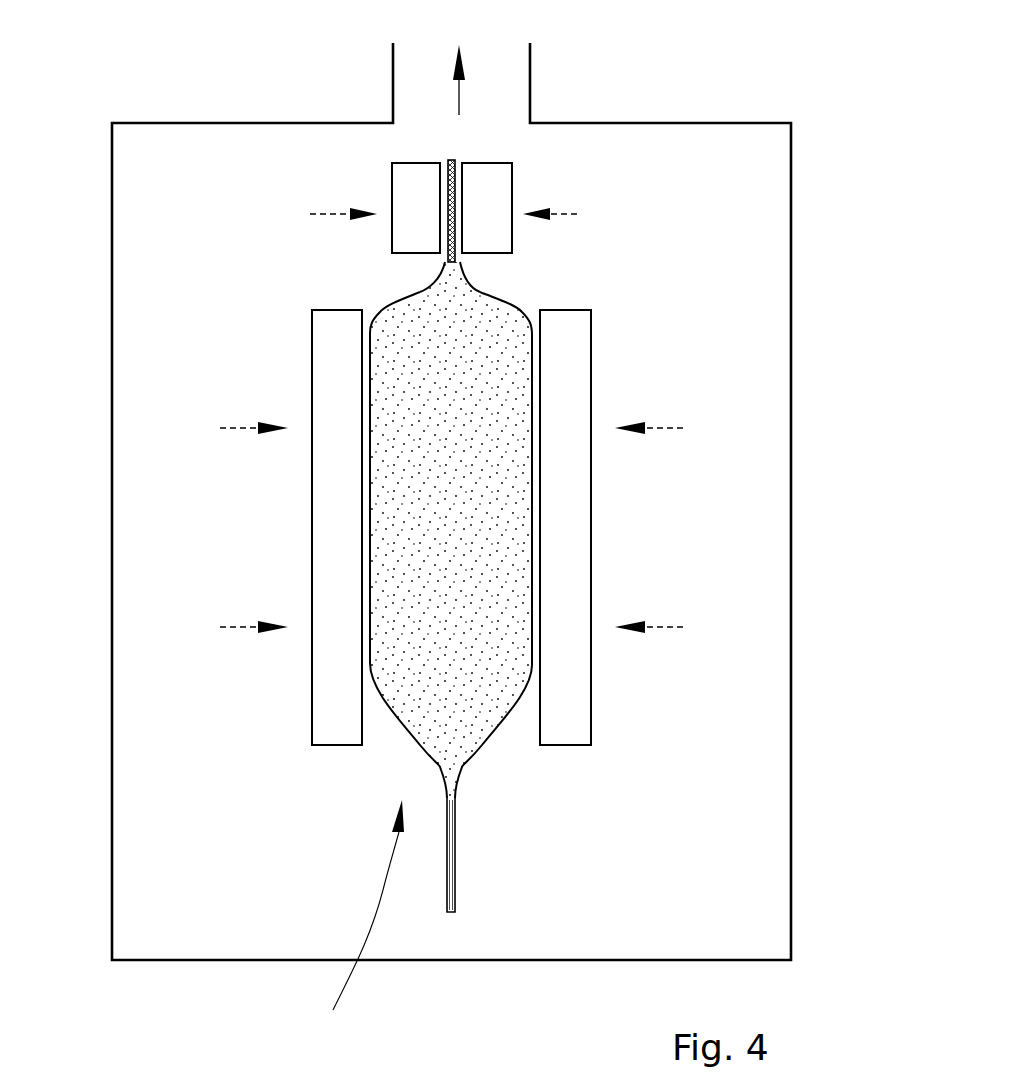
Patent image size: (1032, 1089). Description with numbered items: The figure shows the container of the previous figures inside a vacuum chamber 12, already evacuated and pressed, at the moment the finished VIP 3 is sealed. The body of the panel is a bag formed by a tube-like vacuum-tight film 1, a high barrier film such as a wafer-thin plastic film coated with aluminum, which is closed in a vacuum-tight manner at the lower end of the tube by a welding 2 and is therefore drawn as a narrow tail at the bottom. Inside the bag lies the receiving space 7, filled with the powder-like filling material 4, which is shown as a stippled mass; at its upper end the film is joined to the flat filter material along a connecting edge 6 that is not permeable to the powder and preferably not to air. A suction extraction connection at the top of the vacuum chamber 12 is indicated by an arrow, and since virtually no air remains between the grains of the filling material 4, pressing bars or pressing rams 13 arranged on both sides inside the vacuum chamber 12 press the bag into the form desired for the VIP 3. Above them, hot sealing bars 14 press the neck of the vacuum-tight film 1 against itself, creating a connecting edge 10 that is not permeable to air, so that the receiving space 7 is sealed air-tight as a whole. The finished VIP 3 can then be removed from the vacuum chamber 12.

The vacuum-tight film 1 is at (487, 732).
The welding 2 is at (457, 898).
The VIP 3 is at (364, 925).
The powder-like filling material 4 is at (410, 673).
The connecting edge 6 is at (443, 273).
The receiving space 7 is at (475, 594).
The connecting edge 10 is at (452, 207).
The vacuum chamber 12 is at (663, 122).
The pressing bars or pressing rams 13 is at (312, 537).
The hot sealing bars 14 is at (512, 190).